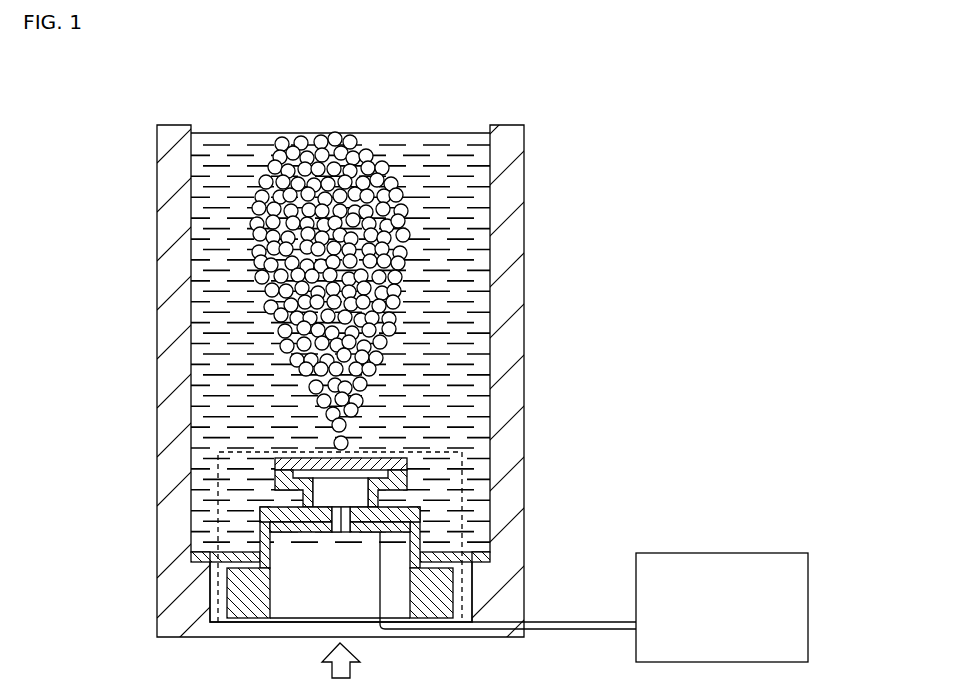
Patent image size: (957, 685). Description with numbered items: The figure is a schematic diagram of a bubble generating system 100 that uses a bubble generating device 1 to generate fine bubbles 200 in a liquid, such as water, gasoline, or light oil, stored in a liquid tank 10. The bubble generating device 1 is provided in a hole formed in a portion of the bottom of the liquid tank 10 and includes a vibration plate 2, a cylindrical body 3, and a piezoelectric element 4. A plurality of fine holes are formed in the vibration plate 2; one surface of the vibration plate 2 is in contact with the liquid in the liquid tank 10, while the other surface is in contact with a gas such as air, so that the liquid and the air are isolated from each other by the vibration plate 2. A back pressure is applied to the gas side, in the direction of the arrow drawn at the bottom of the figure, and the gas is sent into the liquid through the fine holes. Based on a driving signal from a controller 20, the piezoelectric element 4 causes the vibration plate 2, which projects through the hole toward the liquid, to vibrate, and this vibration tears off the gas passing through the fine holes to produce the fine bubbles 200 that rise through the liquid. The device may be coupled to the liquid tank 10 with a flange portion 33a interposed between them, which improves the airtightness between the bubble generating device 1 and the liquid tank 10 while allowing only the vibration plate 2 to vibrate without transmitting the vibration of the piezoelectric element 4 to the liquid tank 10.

The bubble generating system 100 is at (548, 112).
The liquid tank 10 is at (518, 153).
The fine bubbles 200 is at (406, 196).
The bubble generating device 1 is at (466, 456).
The vibration plate 2 is at (408, 462).
The cylindrical body 3 is at (389, 497).
The piezoelectric element 4 is at (387, 527).
The flange portion 33a is at (192, 558).
The controller 20 is at (766, 553).